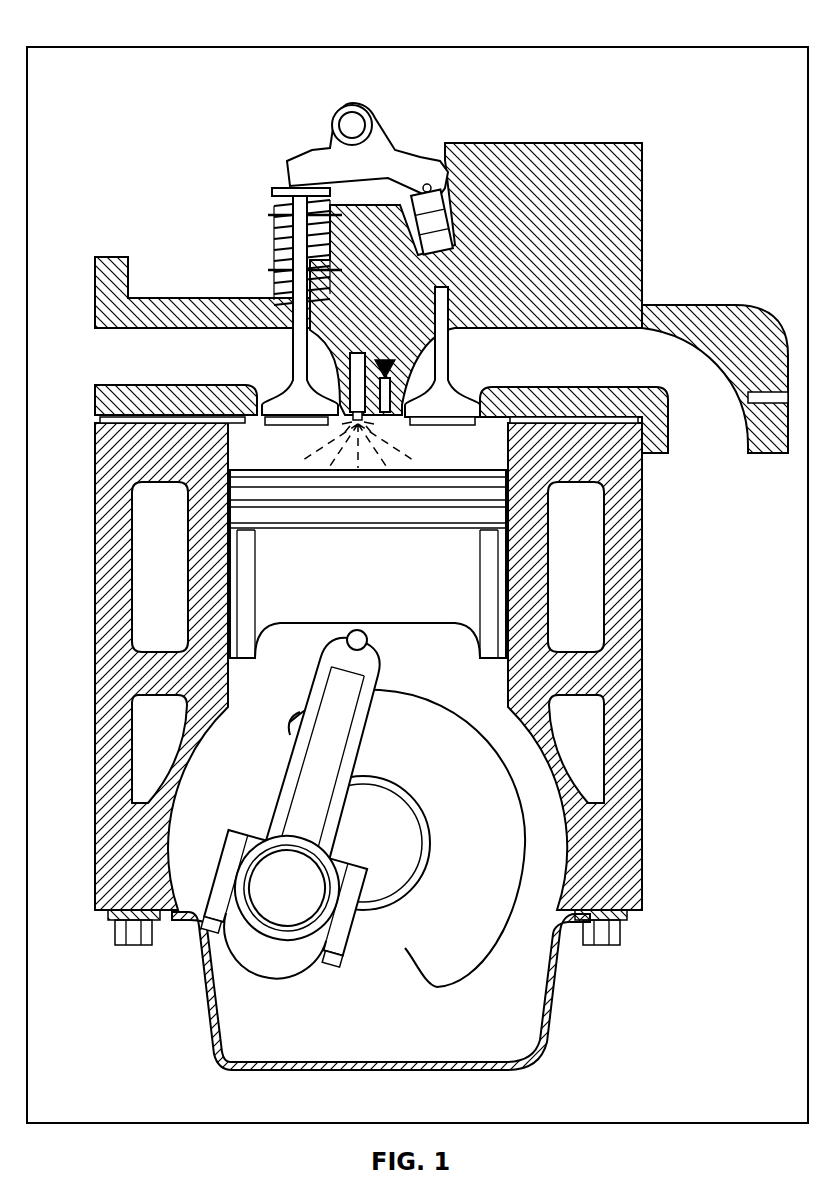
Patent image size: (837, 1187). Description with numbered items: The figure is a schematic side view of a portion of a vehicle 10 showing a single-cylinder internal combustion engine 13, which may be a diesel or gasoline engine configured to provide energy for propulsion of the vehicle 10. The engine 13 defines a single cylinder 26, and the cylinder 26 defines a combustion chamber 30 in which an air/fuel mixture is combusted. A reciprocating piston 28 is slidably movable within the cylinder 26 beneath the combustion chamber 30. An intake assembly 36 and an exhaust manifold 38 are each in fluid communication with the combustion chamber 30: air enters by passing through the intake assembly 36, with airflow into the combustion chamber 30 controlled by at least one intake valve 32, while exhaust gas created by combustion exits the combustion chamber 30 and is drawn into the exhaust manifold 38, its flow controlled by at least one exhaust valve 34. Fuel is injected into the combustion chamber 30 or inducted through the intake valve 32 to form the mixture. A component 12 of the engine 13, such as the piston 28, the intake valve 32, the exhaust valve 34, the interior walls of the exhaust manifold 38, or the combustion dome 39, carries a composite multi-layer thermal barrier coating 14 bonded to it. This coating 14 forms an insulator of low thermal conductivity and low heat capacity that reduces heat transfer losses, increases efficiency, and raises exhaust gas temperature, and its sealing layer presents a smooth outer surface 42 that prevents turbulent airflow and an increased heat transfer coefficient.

The vehicle 10 is at (70, 46).
The component 12 is at (293, 312).
The engine 13 is at (176, 154).
The composite thermal barrier coating 14 is at (700, 428).
The cylinder 26 is at (508, 621).
The piston 28 is at (255, 555).
The combustion chamber 30 is at (485, 472).
The intake valve 32 is at (296, 378).
The exhaust valve 34 is at (443, 322).
The intake assembly 36 is at (95, 292).
The exhaust manifold 38 is at (733, 304).
The combustion dome 39 is at (236, 486).
The outer surface 42 is at (458, 464).